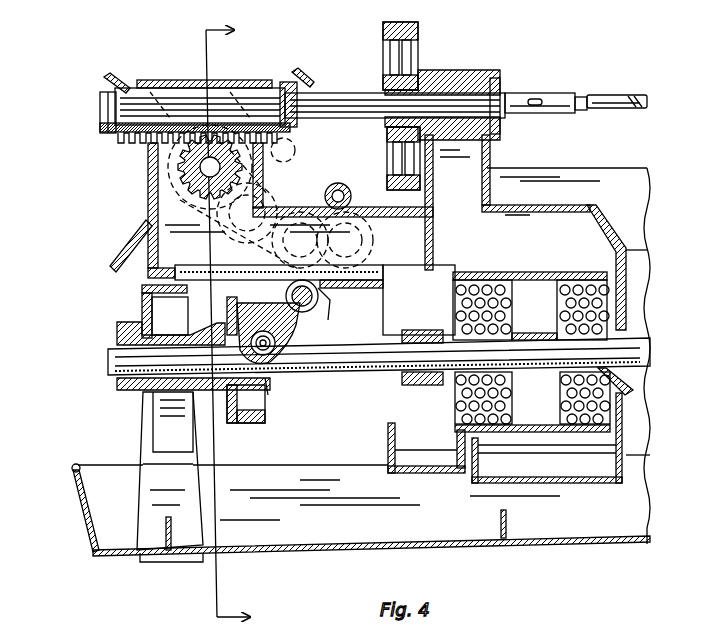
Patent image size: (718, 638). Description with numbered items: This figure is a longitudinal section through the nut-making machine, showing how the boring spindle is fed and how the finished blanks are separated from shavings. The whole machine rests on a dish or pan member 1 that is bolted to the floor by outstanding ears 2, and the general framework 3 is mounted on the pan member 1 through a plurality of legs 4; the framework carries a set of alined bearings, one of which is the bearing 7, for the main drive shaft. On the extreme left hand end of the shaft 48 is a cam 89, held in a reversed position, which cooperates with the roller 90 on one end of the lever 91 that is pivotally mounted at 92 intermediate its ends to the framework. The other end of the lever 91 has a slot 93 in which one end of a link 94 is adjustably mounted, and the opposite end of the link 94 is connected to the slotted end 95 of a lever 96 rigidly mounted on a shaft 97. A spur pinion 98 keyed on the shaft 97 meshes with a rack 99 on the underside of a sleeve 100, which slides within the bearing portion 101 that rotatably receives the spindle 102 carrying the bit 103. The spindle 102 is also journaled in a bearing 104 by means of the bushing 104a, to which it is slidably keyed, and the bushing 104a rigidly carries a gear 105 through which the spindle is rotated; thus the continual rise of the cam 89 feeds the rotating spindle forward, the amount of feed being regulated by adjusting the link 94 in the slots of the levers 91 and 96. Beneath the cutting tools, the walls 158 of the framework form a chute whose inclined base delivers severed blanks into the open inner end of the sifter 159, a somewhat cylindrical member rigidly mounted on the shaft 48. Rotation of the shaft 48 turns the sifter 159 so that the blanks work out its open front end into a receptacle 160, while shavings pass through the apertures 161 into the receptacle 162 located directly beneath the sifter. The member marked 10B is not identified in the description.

The dish or pan member 1 is at (105, 487).
The outstanding ears 2 is at (160, 560).
The general framework 3 is at (580, 232).
The legs 4 is at (170, 440).
The bearing 7 is at (236, 322).
The leg member 10B is at (158, 392).
The shaft 48 is at (110, 360).
The cam 89 is at (258, 425).
The roller 90 is at (270, 378).
The lever 91 is at (297, 330).
The pivot shaft 92 is at (320, 304).
The slot 93 is at (340, 248).
The link 94 is at (301, 207).
The slotted end 95 is at (262, 250).
The lever 96 is at (263, 184).
The shaft 97 is at (150, 190).
The spur pinion 98 is at (185, 168).
The rack 99 is at (130, 143).
The sleeve 100 is at (165, 100).
The bearing portion 101 is at (183, 78).
The spindle 102 is at (332, 100).
The bit 103 is at (612, 97).
The bearing 104 is at (465, 70).
The bushing 104a is at (546, 75).
The gear 105 is at (415, 30).
The walls 158 is at (622, 300).
The sifter 159 is at (455, 388).
The receptacle 160 is at (388, 440).
The apertures 161 is at (455, 400).
The receptacle 162 is at (595, 450).